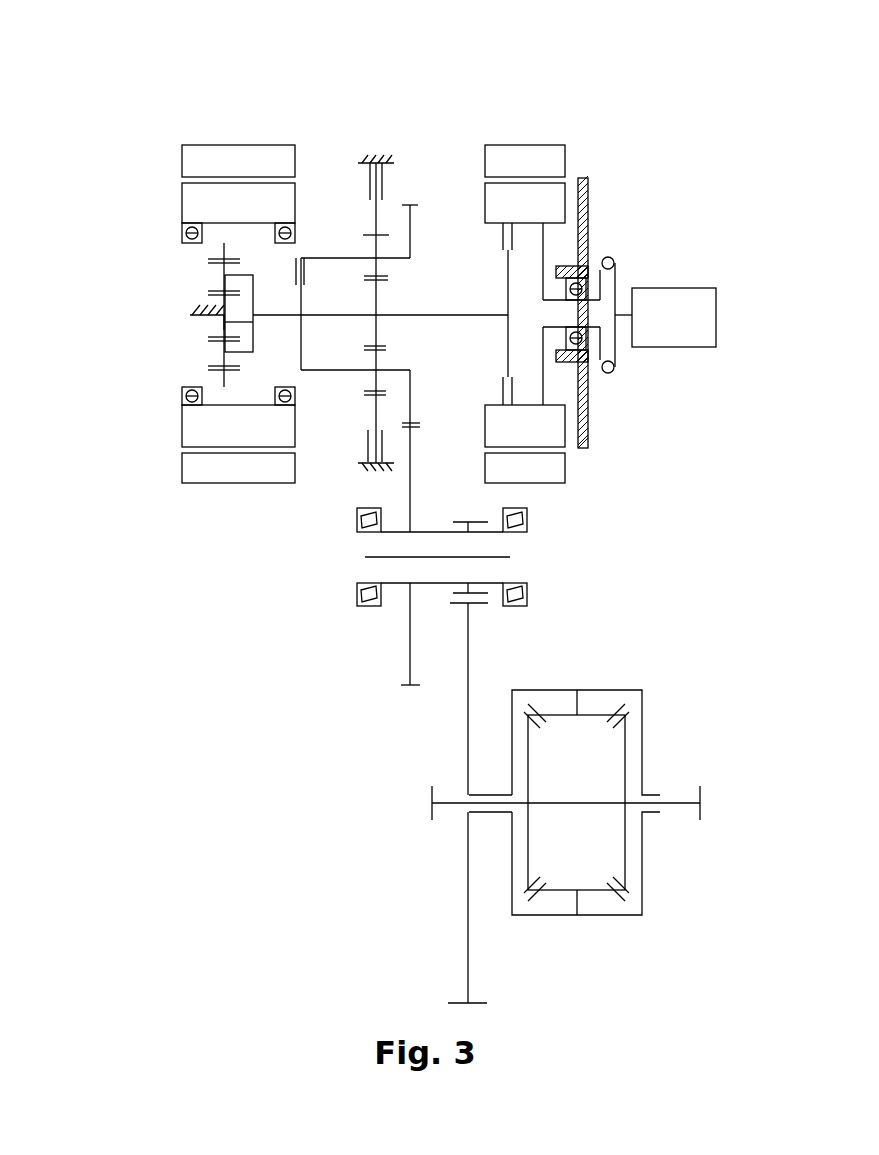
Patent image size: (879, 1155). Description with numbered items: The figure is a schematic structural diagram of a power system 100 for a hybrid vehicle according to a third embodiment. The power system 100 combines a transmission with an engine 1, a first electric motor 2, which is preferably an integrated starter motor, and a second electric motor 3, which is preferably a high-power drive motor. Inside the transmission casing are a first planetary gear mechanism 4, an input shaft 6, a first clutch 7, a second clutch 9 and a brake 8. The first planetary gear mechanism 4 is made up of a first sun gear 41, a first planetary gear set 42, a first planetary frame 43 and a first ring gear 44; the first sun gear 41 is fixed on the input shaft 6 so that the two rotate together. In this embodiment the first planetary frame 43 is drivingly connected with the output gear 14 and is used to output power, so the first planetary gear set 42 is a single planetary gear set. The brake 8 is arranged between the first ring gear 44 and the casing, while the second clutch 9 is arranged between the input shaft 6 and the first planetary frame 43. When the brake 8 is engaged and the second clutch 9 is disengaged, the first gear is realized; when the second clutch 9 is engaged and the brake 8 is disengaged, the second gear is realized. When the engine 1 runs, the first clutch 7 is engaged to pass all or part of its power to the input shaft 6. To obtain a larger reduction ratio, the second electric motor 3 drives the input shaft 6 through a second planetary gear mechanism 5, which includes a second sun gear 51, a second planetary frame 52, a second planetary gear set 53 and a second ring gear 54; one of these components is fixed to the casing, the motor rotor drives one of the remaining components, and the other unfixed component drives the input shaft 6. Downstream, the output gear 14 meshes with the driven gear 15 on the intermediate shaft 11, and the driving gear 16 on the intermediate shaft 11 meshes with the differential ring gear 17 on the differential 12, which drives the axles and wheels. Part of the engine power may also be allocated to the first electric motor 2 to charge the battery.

The power system 100 is at (757, 28).
The engine 1 is at (693, 310).
The first electric motor 2 is at (566, 141).
The second electric motor 3 is at (207, 136).
The first planetary gear mechanism 4 is at (450, 257).
The first sun gear 41 is at (392, 367).
The first planetary gear set 42 is at (377, 319).
The first planetary frame 43 is at (412, 235).
The first ring gear 44 is at (370, 236).
The second planetary gear mechanism 5 is at (218, 279).
The second sun gear 51 is at (220, 297).
The second planetary frame 52 is at (222, 322).
The second planetary gear set 53 is at (220, 347).
The second ring gear 54 is at (213, 368).
The input shaft 6 is at (490, 316).
The first clutch 7 is at (507, 397).
The brake 8 is at (383, 445).
The second clutch 9 is at (301, 256).
The intermediate shaft 11 is at (473, 558).
The differential 12 is at (578, 823).
The output gear 14 is at (405, 425).
The driven gear 15 is at (408, 495).
The driving gear 16 is at (460, 524).
The differential ring gear 17 is at (458, 607).